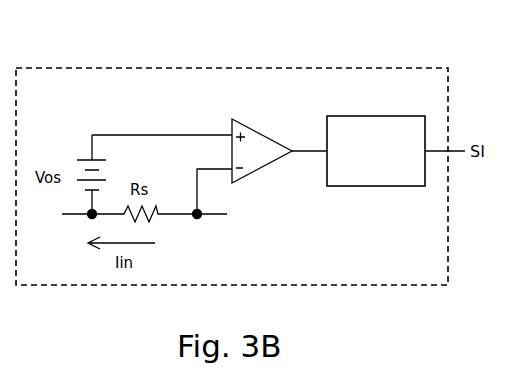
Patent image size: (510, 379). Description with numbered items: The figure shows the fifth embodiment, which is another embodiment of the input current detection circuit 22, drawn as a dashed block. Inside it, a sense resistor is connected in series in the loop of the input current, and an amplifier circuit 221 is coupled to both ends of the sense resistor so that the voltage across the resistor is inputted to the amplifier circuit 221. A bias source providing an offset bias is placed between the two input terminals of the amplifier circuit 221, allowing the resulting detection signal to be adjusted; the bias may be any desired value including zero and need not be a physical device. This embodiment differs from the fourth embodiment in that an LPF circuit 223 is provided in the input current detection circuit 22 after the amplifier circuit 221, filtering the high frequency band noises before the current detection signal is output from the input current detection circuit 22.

The input current detection circuit 22 is at (49, 281).
The amplifier circuit 221 is at (262, 132).
The LPF circuit 223 is at (392, 175).